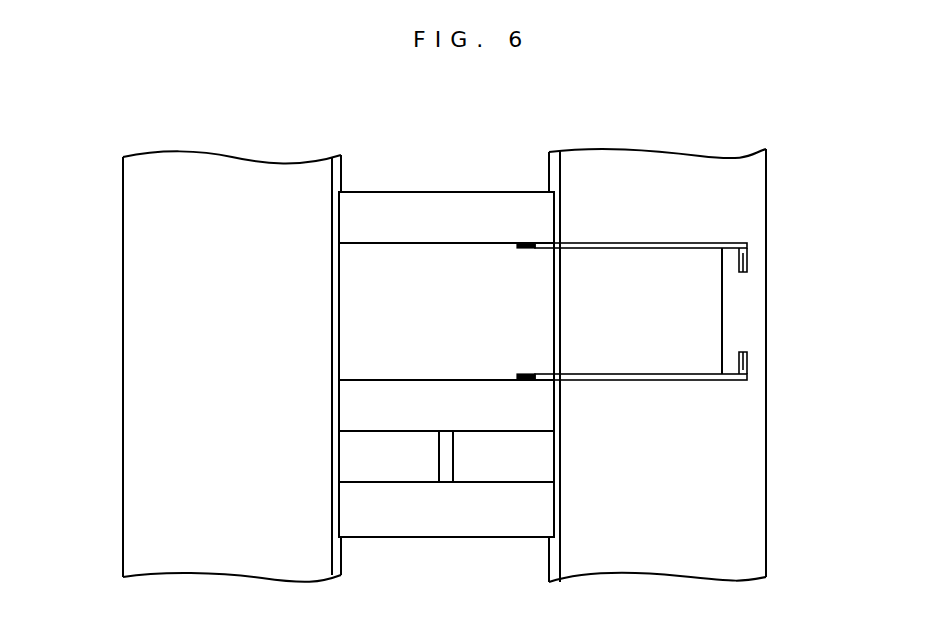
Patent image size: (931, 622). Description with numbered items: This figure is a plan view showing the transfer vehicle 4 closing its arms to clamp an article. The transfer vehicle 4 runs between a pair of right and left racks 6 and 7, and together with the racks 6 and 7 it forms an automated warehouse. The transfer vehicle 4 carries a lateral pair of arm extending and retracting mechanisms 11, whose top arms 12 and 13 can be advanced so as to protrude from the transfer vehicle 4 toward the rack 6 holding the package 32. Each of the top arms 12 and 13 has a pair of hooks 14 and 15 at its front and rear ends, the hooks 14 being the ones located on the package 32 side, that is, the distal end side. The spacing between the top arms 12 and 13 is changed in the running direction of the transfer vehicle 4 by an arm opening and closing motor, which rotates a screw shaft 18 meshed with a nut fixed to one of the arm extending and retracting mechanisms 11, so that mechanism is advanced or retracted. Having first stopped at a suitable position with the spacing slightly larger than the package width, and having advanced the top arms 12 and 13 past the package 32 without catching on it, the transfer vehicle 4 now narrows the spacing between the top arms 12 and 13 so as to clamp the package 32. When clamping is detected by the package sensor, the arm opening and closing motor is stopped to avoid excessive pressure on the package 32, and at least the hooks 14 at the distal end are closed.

The transfer vehicle 4 is at (454, 593).
The rack 6 is at (740, 469).
The rack 7 is at (157, 347).
The arm extending and retracting mechanism 11 is at (437, 202).
The top arm 12 is at (640, 247).
The top arm 13 is at (634, 382).
The hook 14 is at (748, 257).
The hook 15 is at (524, 252).
The screw shaft 18 is at (446, 457).
The package 32 is at (688, 312).